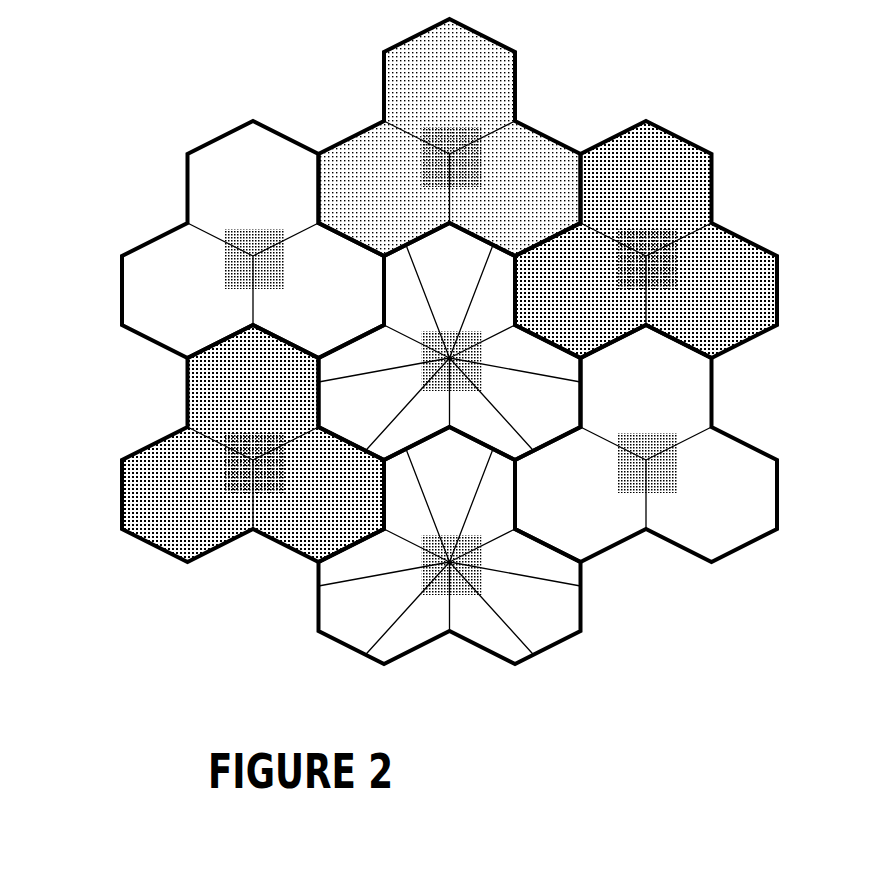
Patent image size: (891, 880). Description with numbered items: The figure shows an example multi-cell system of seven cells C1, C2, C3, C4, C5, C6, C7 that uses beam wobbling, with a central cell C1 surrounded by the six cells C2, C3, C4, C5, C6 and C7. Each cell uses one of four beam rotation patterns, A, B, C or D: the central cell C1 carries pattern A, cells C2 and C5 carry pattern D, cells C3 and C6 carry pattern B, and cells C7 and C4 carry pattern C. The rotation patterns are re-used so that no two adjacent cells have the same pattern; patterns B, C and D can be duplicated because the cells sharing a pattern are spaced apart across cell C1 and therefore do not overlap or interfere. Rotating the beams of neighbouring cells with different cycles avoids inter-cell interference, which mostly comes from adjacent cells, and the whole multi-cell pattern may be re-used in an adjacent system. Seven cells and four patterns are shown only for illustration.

The cell C1 is at (402, 268).
The cell C2 is at (515, 80).
The cell C3 is at (712, 182).
The cell C4 is at (777, 480).
The cell C5 is at (320, 608).
The cell C6 is at (123, 480).
The cell C7 is at (212, 143).